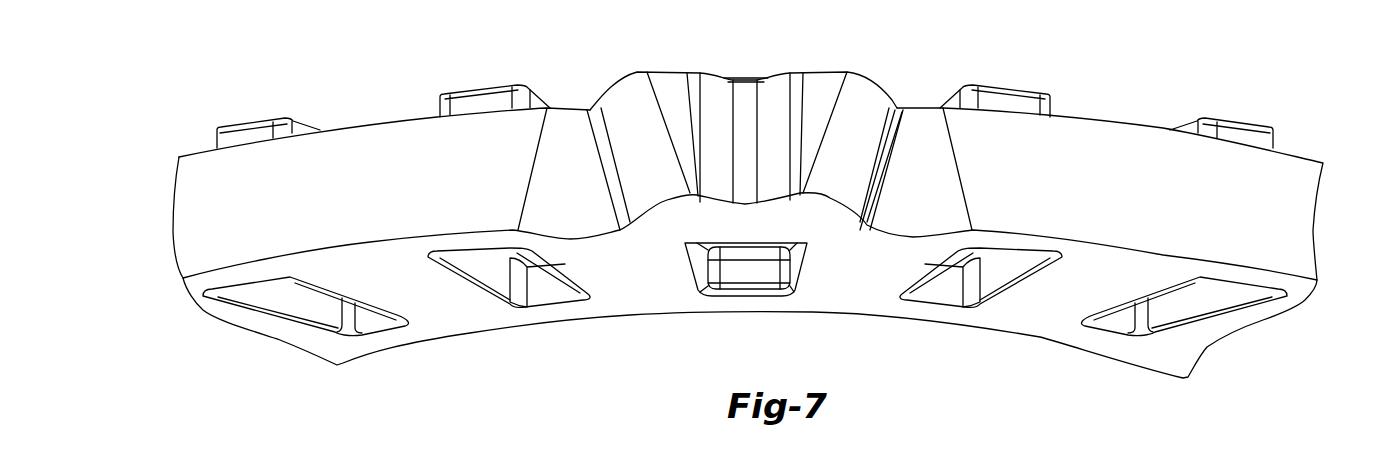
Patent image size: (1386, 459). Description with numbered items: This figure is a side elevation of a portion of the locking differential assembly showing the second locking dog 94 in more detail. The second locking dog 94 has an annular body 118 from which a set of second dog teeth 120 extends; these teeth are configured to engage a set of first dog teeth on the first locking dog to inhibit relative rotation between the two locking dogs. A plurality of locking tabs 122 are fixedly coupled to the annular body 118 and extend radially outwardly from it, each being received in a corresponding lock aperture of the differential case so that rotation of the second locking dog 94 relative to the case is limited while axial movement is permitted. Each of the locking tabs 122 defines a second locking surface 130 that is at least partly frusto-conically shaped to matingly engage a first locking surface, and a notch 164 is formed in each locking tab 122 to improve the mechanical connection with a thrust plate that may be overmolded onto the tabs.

The second locking dog 94 is at (770, 201).
The annular body 118 is at (1263, 197).
The set of second dog teeth 120 is at (482, 88).
The locking tabs 122 is at (844, 127).
The second locking surface 130 is at (838, 150).
The notch 164 is at (746, 93).